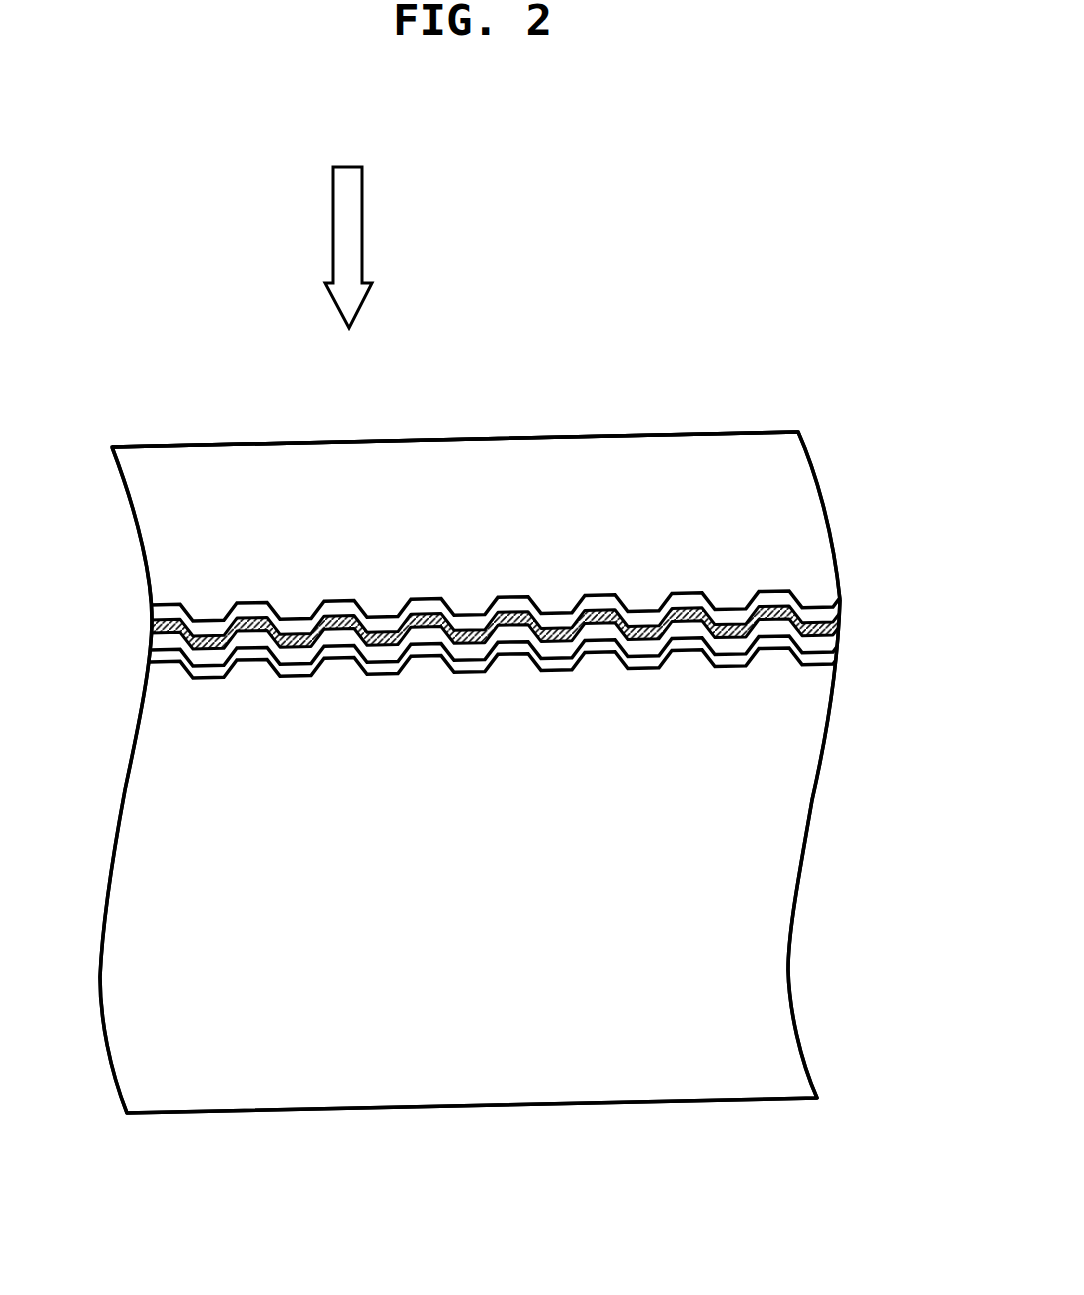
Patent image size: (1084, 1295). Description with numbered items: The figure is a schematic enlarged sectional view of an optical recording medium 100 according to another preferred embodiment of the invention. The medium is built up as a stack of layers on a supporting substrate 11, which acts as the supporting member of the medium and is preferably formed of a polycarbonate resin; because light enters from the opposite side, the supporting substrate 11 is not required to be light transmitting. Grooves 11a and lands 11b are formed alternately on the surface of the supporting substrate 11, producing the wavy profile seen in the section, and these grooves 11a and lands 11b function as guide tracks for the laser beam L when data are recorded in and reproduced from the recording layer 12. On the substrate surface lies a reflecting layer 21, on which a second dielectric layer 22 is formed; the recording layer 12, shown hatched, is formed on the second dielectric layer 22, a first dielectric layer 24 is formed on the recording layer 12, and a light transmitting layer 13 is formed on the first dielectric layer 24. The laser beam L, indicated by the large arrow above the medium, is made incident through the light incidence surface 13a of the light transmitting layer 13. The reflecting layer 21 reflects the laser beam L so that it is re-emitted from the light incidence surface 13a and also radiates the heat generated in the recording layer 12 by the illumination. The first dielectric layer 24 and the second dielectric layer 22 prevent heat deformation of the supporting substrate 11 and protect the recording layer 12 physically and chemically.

The optical recording medium 100 is at (632, 368).
The laser beam L is at (362, 225).
The light incidence surface 13a is at (700, 432).
The light transmitting layer 13 is at (783, 515).
The first dielectric layer 24 is at (828, 618).
The recording layer 12 is at (148, 627).
The second dielectric layer 22 is at (825, 645).
The reflecting layer 21 is at (825, 660).
The supporting substrate 11 is at (792, 805).
The grooves 11a is at (250, 663).
The lands 11b is at (465, 675).